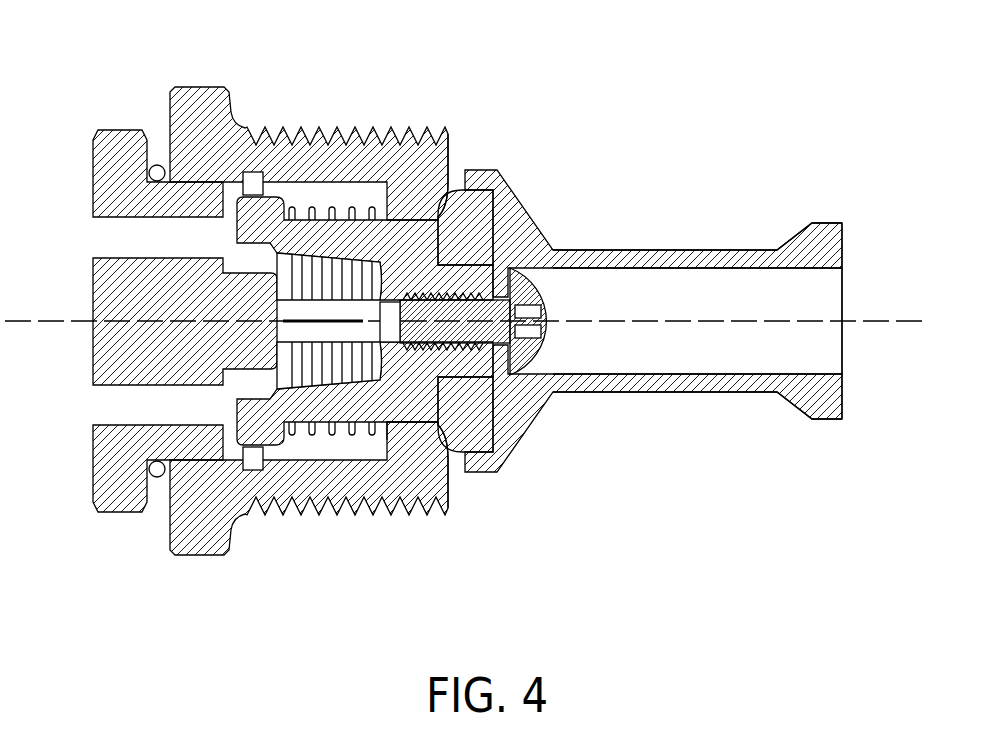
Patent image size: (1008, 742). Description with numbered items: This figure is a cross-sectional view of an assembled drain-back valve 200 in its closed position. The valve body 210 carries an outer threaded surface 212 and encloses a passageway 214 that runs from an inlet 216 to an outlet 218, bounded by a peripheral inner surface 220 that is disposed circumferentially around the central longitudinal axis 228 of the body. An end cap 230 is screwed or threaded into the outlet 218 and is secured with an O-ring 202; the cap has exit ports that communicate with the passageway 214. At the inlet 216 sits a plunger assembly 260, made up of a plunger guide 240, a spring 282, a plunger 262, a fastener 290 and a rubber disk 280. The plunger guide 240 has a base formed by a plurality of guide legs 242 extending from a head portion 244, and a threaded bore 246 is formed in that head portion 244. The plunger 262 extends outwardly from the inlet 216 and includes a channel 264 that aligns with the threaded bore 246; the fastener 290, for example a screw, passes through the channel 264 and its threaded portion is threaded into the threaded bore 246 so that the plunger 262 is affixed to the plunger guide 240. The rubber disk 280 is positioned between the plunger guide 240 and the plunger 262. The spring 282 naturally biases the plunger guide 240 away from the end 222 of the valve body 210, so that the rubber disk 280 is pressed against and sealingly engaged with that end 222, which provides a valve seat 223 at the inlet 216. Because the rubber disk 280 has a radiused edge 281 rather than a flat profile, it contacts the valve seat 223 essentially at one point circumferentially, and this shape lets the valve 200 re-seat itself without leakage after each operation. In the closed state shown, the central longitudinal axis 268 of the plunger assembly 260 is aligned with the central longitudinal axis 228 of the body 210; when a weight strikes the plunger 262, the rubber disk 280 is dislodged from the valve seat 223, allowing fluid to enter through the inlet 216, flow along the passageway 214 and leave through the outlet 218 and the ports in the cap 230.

The drain-back valve 200 is at (660, 75).
The O-ring 202 is at (156, 476).
The valve body 210 is at (413, 160).
The outer threaded surface 212 is at (363, 500).
The passageway 214 is at (360, 448).
The inlet 216 is at (452, 200).
The outlet 218 is at (198, 178).
The peripheral inner surface 220 is at (283, 458).
The end 222 is at (452, 488).
The valve seat 223 is at (443, 433).
The central longitudinal axis 228 is at (283, 322).
The end cap 230 is at (120, 186).
The plunger guide 240 is at (318, 238).
The guide legs 242 is at (323, 395).
The head portion 244 is at (470, 450).
The threaded bore 246 is at (488, 258).
The plunger assembly 260 is at (552, 186).
The plunger 262 is at (636, 258).
The channel 264 is at (803, 327).
The central longitudinal axis 268 is at (710, 320).
The rubber disk 280 is at (494, 180).
The radiused edge 281 is at (464, 222).
The spring 282 is at (345, 212).
The fastener 290 is at (523, 347).